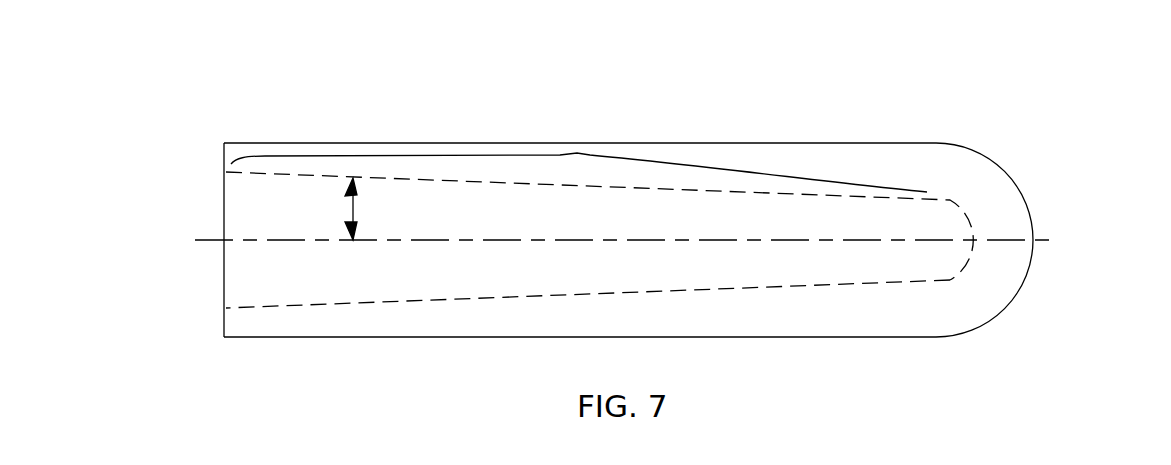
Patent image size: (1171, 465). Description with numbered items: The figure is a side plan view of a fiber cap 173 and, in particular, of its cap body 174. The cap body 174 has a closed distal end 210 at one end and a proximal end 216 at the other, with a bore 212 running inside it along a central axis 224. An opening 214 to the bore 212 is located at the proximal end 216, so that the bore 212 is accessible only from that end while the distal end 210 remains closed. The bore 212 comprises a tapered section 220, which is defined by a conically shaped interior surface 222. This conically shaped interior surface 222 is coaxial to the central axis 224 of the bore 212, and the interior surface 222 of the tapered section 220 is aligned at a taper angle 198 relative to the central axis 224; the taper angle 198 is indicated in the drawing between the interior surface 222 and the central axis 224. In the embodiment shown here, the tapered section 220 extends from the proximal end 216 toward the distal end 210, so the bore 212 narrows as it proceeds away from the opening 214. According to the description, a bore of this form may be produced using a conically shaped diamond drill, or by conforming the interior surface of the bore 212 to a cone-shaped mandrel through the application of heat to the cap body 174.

The sheath assembly 173 is at (1050, 82).
The cap body 174 is at (814, 152).
The closed distal end 210 is at (1004, 195).
The proximal end 216 is at (243, 328).
The opening 214 is at (200, 296).
The tapered section 220 is at (577, 153).
The conically shaped interior surface 222 is at (593, 184).
The bore 212 is at (470, 271).
The central axis 224 is at (203, 238).
The taper angle 198 is at (353, 210).